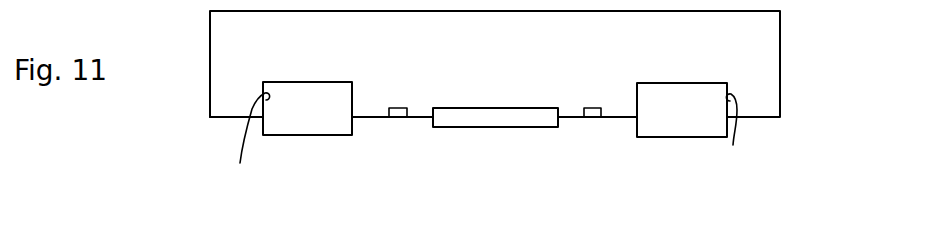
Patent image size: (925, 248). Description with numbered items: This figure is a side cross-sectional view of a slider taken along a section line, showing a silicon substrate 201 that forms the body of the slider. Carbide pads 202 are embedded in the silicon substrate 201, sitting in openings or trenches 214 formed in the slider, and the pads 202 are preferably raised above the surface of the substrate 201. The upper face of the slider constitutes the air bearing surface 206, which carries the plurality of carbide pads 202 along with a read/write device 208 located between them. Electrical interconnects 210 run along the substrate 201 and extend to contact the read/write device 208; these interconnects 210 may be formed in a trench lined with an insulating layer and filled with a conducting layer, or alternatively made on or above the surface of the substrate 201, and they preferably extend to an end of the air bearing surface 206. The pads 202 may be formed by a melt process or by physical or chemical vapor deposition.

The silicon substrate 201 is at (514, 60).
The carbide pads 202 is at (323, 117).
The air bearing surface 206 is at (442, 152).
The read/write device 208 is at (495, 118).
The electrical interconnects 210 is at (397, 119).
The trenches 214 is at (490, 142).